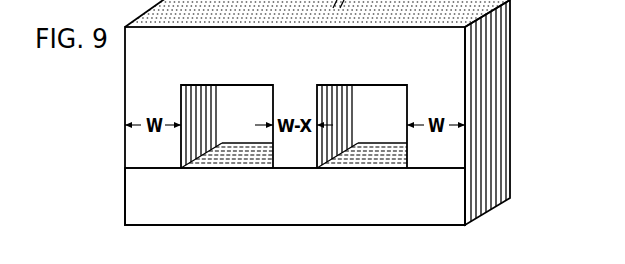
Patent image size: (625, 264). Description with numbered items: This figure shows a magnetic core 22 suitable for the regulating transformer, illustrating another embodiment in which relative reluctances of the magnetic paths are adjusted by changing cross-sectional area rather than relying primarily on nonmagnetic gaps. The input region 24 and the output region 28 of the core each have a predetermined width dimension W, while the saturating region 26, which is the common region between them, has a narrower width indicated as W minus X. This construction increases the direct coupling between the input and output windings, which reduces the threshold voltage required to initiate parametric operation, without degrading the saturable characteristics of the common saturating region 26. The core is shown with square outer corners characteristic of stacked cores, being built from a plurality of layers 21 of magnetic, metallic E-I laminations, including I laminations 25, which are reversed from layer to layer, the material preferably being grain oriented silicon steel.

The layers 21 is at (135, 85).
The magnetic core 22 is at (373, 27).
The input region 24 is at (125, 158).
The I laminations 25 is at (202, 215).
The saturating region 26 is at (294, 126).
The output region 28 is at (465, 160).